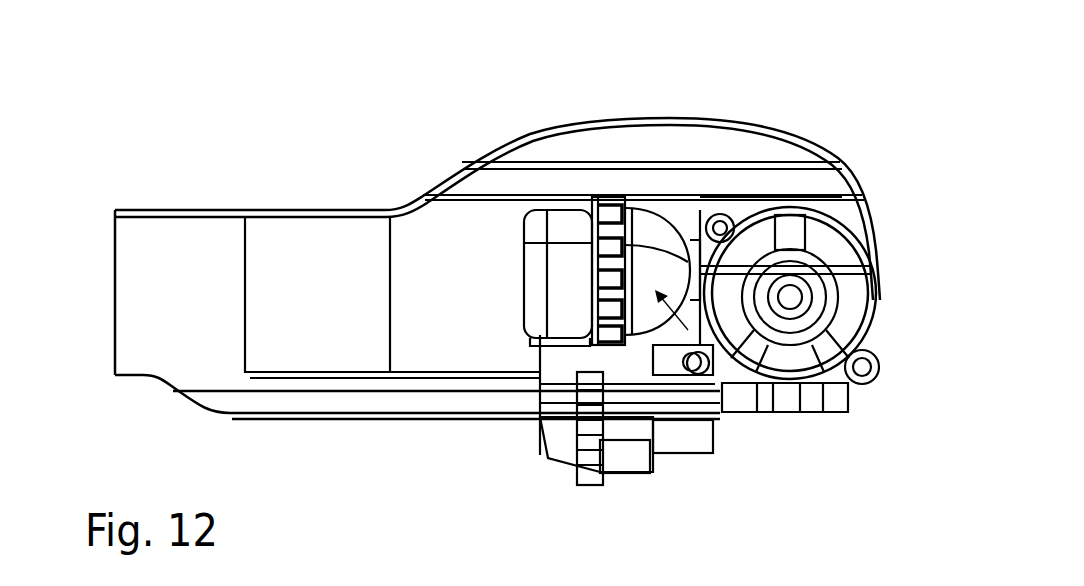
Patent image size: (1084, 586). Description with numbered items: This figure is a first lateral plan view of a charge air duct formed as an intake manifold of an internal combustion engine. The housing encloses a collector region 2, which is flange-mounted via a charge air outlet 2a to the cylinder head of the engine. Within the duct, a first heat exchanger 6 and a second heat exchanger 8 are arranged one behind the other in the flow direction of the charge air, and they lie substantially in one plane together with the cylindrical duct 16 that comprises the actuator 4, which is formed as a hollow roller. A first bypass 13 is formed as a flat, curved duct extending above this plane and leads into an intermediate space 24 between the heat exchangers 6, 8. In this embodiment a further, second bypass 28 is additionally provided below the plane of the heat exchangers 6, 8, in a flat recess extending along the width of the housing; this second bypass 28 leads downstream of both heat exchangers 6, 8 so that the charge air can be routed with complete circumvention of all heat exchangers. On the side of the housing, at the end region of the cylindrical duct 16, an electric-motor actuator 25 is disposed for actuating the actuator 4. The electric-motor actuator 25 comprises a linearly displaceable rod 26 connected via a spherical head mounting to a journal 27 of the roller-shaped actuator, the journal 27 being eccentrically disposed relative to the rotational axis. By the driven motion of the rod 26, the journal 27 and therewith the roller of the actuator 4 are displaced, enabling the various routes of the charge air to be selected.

The collector region 2 is at (172, 254).
The charge air outlet 2a is at (108, 334).
The second heat exchanger 8 is at (312, 272).
The intermediate space 24 is at (470, 252).
The bypass 13 is at (623, 145).
The rod 26 is at (765, 268).
The journal 27 is at (828, 227).
The first heat exchanger 6 is at (578, 347).
The second bypass 28 is at (343, 398).
The electric-motor actuator 25 is at (733, 417).
The actuator 4 is at (783, 290).
The cylindrical duct 16 is at (813, 413).